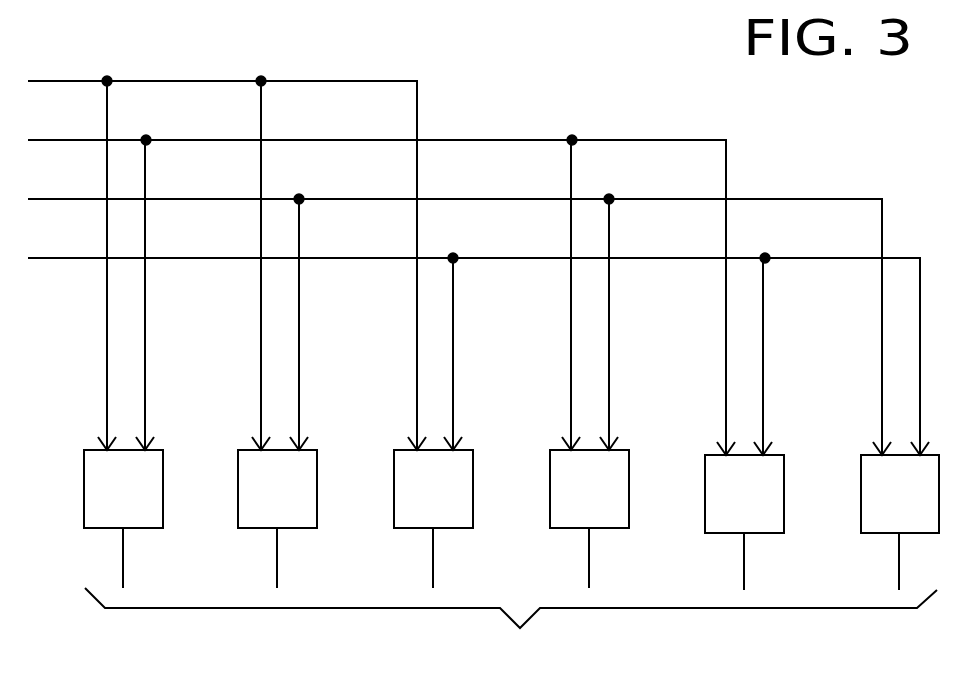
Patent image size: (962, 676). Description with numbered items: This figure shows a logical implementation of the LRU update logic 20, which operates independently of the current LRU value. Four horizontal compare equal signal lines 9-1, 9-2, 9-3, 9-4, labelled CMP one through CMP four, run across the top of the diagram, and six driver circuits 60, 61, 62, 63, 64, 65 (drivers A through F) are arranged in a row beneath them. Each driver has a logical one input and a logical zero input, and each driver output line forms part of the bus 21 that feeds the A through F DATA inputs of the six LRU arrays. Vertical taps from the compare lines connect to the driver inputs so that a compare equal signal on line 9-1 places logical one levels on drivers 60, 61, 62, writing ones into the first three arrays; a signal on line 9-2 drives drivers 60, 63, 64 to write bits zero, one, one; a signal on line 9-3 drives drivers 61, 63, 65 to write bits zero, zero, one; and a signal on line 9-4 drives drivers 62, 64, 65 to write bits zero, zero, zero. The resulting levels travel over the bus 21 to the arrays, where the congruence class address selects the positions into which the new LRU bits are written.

The compare equal signal line 9-1 is at (297, 80).
The compare equal signal line 9-2 is at (458, 139).
The compare equal signal line 9-3 is at (747, 199).
The compare equal signal line 9-4 is at (773, 258).
The LRU update logic 20 is at (609, 86).
The bus 21 is at (511, 625).
The driver circuit 60 is at (83, 475).
The driver circuit 61 is at (240, 474).
The driver circuit 62 is at (394, 508).
The driver circuit 63 is at (550, 515).
The driver circuit 64 is at (705, 508).
The driver circuit 65 is at (860, 512).